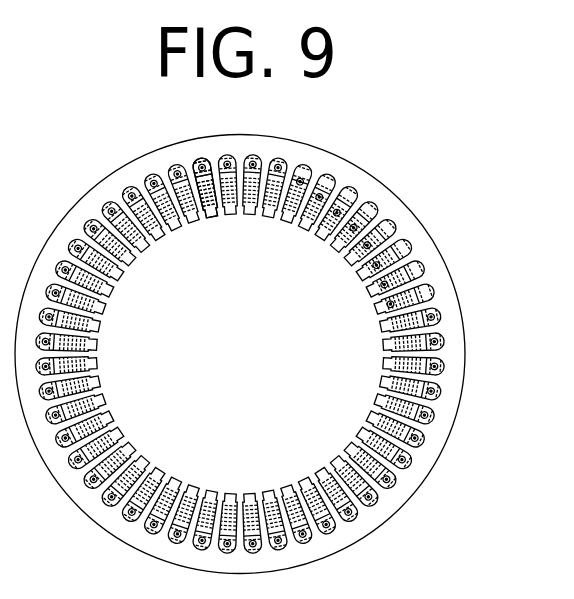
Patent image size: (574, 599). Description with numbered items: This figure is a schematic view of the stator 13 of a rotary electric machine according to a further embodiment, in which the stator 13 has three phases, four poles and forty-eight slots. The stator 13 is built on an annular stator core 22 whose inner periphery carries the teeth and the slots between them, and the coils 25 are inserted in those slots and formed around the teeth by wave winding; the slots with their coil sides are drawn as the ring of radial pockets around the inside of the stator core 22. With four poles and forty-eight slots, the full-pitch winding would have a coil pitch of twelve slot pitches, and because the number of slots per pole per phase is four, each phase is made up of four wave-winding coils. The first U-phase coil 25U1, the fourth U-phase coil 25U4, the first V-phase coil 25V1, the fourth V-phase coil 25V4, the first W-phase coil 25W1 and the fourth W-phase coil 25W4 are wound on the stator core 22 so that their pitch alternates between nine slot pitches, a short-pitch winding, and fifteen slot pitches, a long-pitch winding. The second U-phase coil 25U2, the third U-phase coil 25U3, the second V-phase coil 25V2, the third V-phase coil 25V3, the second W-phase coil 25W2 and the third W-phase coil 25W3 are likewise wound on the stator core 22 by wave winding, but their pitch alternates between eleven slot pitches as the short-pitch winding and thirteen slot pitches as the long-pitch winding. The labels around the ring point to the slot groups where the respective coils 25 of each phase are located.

The stator 13 is at (276, 343).
The stator core 22 is at (455, 380).
The coils 25 is at (443, 355).
The first U-phase coil 25U1 is at (268, 163).
The second U-phase coil 25U2 is at (162, 185).
The third U-phase coil 25U3 is at (135, 183).
The fourth U-phase coil 25U4 is at (179, 165).
The first V-phase coil 25V1 is at (350, 180).
The second V-phase coil 25V2 is at (405, 235).
The third V-phase coil 25V3 is at (418, 262).
The fourth V-phase coil 25V4 is at (378, 208).
The first W-phase coil 25W1 is at (220, 208).
The second W-phase coil 25W2 is at (317, 217).
The third W-phase coil 25W3 is at (290, 225).
The fourth W-phase coil 25W4 is at (231, 210).